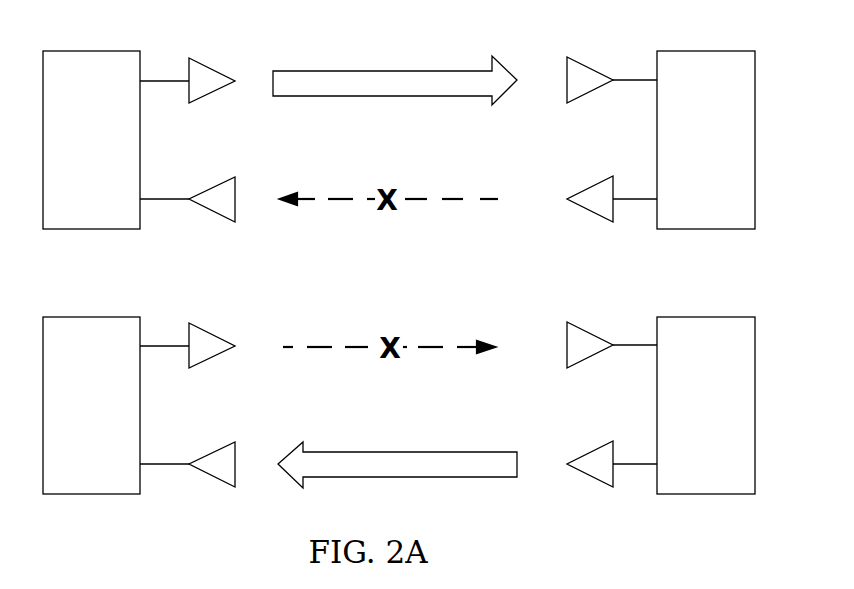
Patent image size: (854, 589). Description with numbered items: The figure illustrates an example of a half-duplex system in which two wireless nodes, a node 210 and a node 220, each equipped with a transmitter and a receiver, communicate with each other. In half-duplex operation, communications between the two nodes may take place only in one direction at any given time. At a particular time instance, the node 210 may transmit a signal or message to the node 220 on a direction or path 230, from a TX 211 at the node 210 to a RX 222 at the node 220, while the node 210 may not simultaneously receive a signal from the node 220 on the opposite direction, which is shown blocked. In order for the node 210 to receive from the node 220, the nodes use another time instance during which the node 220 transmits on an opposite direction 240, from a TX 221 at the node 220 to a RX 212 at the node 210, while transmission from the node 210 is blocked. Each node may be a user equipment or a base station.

The node 210 is at (70, 170).
The TX 211 is at (210, 65).
The RX 212 is at (214, 186).
The node 220 is at (684, 170).
The TX 221 is at (580, 190).
The RX 222 is at (585, 64).
The direction 230 is at (367, 71).
The opposite direction 240 is at (385, 452).